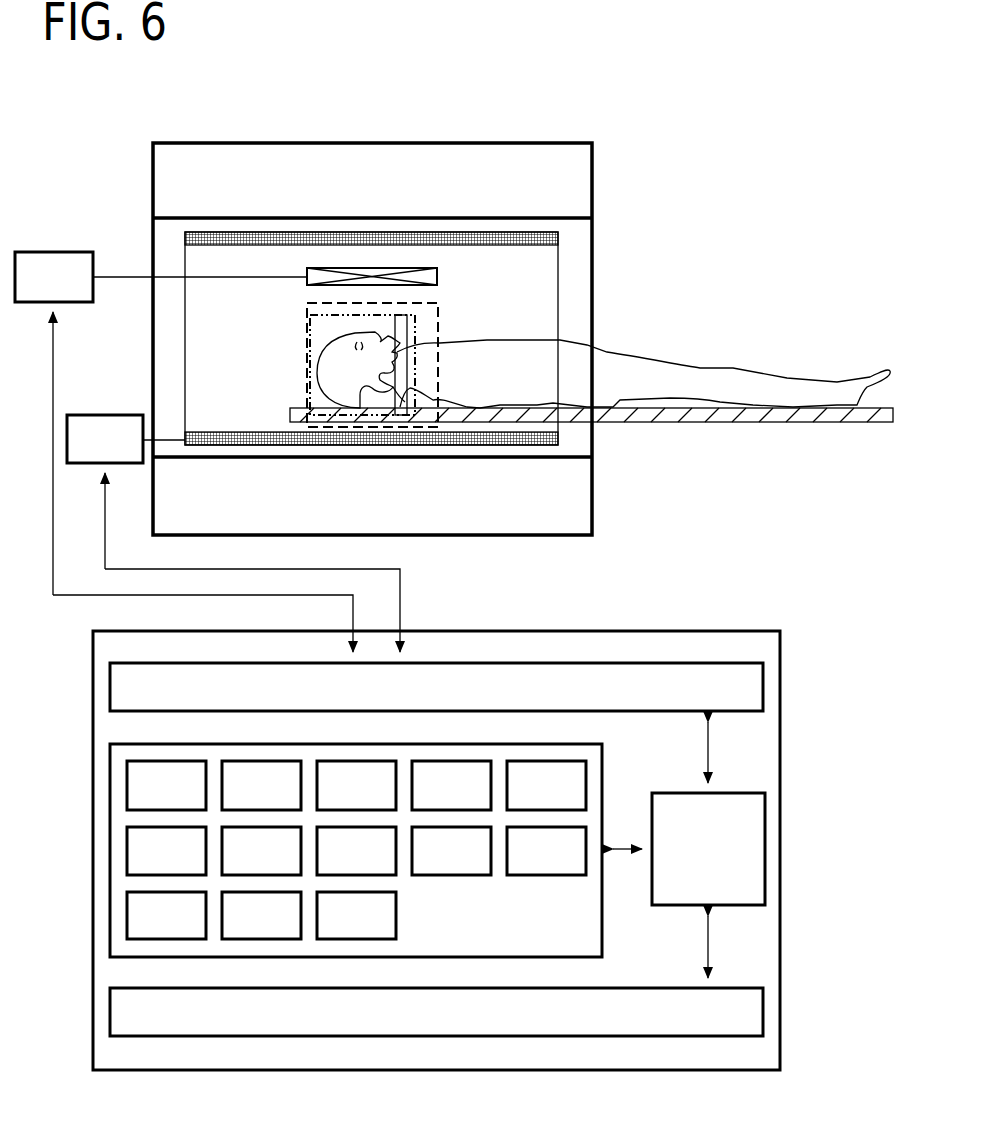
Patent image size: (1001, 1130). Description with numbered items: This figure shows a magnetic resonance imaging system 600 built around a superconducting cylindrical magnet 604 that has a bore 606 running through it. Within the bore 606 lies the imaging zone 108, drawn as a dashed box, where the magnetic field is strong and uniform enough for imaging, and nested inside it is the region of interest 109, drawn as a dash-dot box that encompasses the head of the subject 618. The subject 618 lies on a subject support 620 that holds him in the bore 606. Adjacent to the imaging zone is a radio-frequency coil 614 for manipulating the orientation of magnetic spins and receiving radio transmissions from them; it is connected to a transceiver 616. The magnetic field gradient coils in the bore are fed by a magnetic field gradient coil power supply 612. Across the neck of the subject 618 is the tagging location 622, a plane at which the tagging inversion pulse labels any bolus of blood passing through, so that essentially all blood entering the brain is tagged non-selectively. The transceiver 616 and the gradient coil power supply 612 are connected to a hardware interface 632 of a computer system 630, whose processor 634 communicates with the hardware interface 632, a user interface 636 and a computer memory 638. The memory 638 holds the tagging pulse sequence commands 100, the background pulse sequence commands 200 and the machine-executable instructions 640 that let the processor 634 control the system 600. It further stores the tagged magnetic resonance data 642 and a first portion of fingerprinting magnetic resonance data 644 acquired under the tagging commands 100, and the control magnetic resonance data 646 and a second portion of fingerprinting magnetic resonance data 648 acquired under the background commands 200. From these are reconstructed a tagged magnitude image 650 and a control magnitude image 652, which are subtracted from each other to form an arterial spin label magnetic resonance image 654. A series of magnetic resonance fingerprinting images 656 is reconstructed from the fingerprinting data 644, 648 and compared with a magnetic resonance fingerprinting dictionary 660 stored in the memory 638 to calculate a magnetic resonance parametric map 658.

The magnetic resonance imaging system 600 is at (745, 90).
The magnet 604 is at (592, 158).
The bore of magnet 606 is at (540, 272).
The magnetic field gradient coil power supply 612 is at (127, 454).
The radio-frequency coil 614 is at (420, 277).
The transceiver 616 is at (75, 291).
The subject 618 is at (318, 356).
The subject support 620 is at (730, 415).
The tagging location 622 is at (405, 402).
The labeling duration 108 is at (307, 312).
The region of interest 109 is at (415, 338).
The computer system 630 is at (632, 631).
The hardware interface 632 is at (471, 702).
The processor 634 is at (730, 862).
The user interface 636 is at (471, 1025).
The computer memory 638 is at (516, 930).
The tagging pulse sequence commands 100 is at (188, 800).
The background pulse sequence commands 200 is at (283, 800).
The machine-executable instructions 640 is at (378, 800).
The tagged magnetic resonance data 642 is at (473, 800).
The first portion of fingerprinting magnetic resonance data 644 is at (568, 800).
The control magnetic resonance data 646 is at (188, 865).
The second portion of fingerprinting magnetic resonance data 648 is at (283, 865).
The tagged magnitude image 650 is at (378, 865).
The control magnitude image 652 is at (473, 865).
The arterial spin label magnetic resonance image 654 is at (568, 865).
The series of magnetic resonance fingerprinting images 656 is at (188, 930).
The magnetic resonance parametric map 658 is at (283, 930).
The magnetic resonance fingerprinting dictionary 660 is at (378, 930).